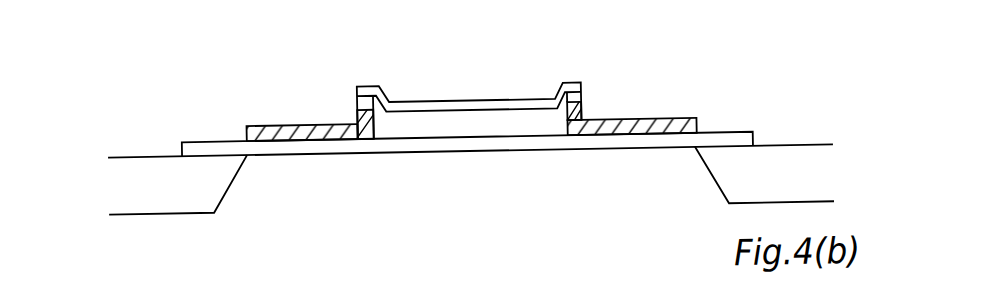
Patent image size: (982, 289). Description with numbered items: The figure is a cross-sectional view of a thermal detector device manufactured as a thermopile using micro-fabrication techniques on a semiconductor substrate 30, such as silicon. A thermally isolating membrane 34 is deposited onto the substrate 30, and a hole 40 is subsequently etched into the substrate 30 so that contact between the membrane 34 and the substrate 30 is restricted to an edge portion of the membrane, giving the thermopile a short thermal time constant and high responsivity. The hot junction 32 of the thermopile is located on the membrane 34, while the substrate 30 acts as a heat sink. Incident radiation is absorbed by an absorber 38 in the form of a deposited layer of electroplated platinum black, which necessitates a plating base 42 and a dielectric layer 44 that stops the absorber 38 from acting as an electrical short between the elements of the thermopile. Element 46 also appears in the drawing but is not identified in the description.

The semiconductor substrate 30 is at (471, 179).
The hot junction 32 is at (688, 120).
The thermally isolating membrane 34 is at (599, 156).
The absorber 38 is at (443, 99).
The hole 40 is at (495, 169).
The plating base 42 is at (355, 95).
The dielectric layer 44 is at (588, 100).
The element 46 is at (406, 280).